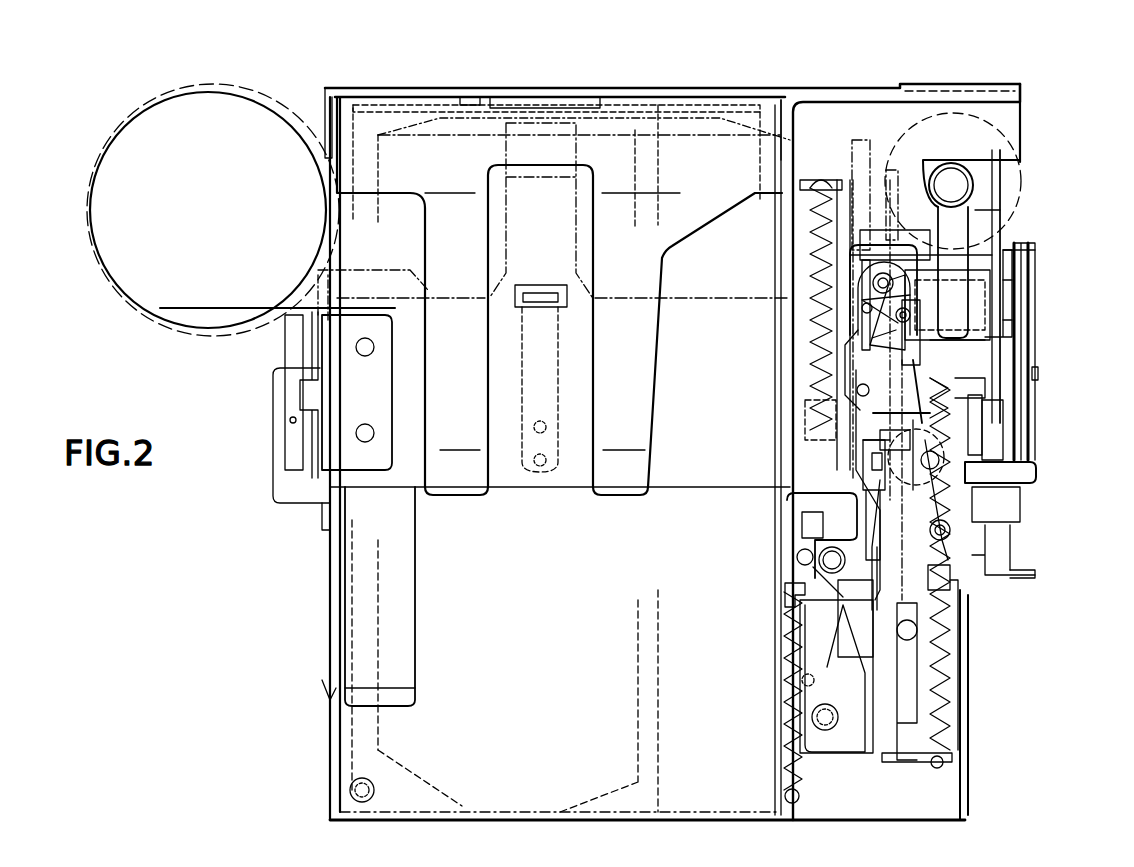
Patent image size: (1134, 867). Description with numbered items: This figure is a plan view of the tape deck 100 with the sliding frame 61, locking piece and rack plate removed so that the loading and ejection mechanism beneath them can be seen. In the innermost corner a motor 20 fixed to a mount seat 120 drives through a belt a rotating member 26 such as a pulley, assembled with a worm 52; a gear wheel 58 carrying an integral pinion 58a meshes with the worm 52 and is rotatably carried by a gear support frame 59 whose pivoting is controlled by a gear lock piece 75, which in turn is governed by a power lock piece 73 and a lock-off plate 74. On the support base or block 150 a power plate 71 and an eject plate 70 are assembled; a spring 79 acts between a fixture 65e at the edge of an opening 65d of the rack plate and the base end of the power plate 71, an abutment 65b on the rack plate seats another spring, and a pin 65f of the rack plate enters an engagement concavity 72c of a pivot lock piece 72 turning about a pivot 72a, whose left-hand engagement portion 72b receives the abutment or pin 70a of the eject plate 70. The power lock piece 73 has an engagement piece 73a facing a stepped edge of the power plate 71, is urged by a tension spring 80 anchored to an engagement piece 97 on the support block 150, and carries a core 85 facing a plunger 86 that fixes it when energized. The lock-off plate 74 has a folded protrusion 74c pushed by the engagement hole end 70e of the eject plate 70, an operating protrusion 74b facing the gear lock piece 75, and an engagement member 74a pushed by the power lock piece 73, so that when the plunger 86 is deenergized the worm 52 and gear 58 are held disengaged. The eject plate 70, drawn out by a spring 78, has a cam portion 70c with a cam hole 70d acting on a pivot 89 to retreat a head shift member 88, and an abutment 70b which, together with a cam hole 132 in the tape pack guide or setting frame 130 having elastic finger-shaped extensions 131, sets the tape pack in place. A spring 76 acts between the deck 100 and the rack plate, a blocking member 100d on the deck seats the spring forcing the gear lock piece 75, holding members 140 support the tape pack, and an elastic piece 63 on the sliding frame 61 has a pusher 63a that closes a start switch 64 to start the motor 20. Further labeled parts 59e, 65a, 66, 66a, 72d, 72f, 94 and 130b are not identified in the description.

The motor 20 is at (148, 310).
The rotating member 26 is at (925, 120).
The worm 52 is at (1012, 160).
The gear wheel 58 is at (905, 200).
The pinion 58a is at (1000, 222).
The gear support frame 59 is at (1028, 324).
The plate portion 59e is at (1020, 250).
The sliding frame 61 is at (530, 488).
The elastic piece 63 is at (382, 395).
The pusher 63a is at (292, 393).
The start switch 64 is at (276, 433).
The slide member portion 65a is at (990, 185).
The abutment 65b is at (872, 450).
The opening 65d is at (1030, 345).
The fixture 65e is at (1040, 366).
The pin 65f is at (918, 300).
The lock lever 66 is at (806, 662).
The lock lever pin 66a is at (797, 554).
The eject plate 70 is at (866, 388).
The abutment 70a is at (858, 312).
The abutment 70b is at (868, 272).
The cam portion 70c is at (790, 595).
The cam hole 70d is at (838, 640).
The engagement hole end 70e is at (855, 420).
The power plate 71 is at (952, 675).
The pivot lock piece 72 is at (958, 235).
The pivot 72a is at (858, 245).
The engagement portion 72b is at (866, 340).
The engagement concavity 72c is at (920, 312).
The lever arm portion 72d is at (955, 368).
The lever arm portion 72f is at (858, 355).
The power lock piece 73 is at (970, 392).
The engagement piece 73a is at (955, 528).
The lock-off plate 74 is at (870, 495).
The engagement member 74a is at (1020, 400).
The operating protrusion 74b is at (1037, 480).
The folded protrusion 74c is at (870, 462).
The gear lock piece 75 is at (1028, 282).
The spring 76 is at (808, 322).
The spring 78 is at (782, 722).
The spring 79 is at (953, 643).
The tension spring 80 is at (985, 405).
The core 85 is at (995, 440).
The plunger 86 is at (1022, 505).
The head shift member 88 is at (786, 510).
The pivot 89 is at (818, 566).
The pin 94 is at (940, 460).
The engagement piece 97 is at (950, 580).
The tape deck 100 is at (592, 780).
The blocking member 100d is at (1020, 576).
The mount seat 120 is at (102, 182).
The tape pack guide 130 is at (445, 110).
The cassette holder wall 130b is at (782, 140).
The finger-shaped extensions 131 is at (475, 395).
The cam hole 132 is at (776, 165).
The holding members 140 is at (360, 725).
The support base 150 is at (930, 783).